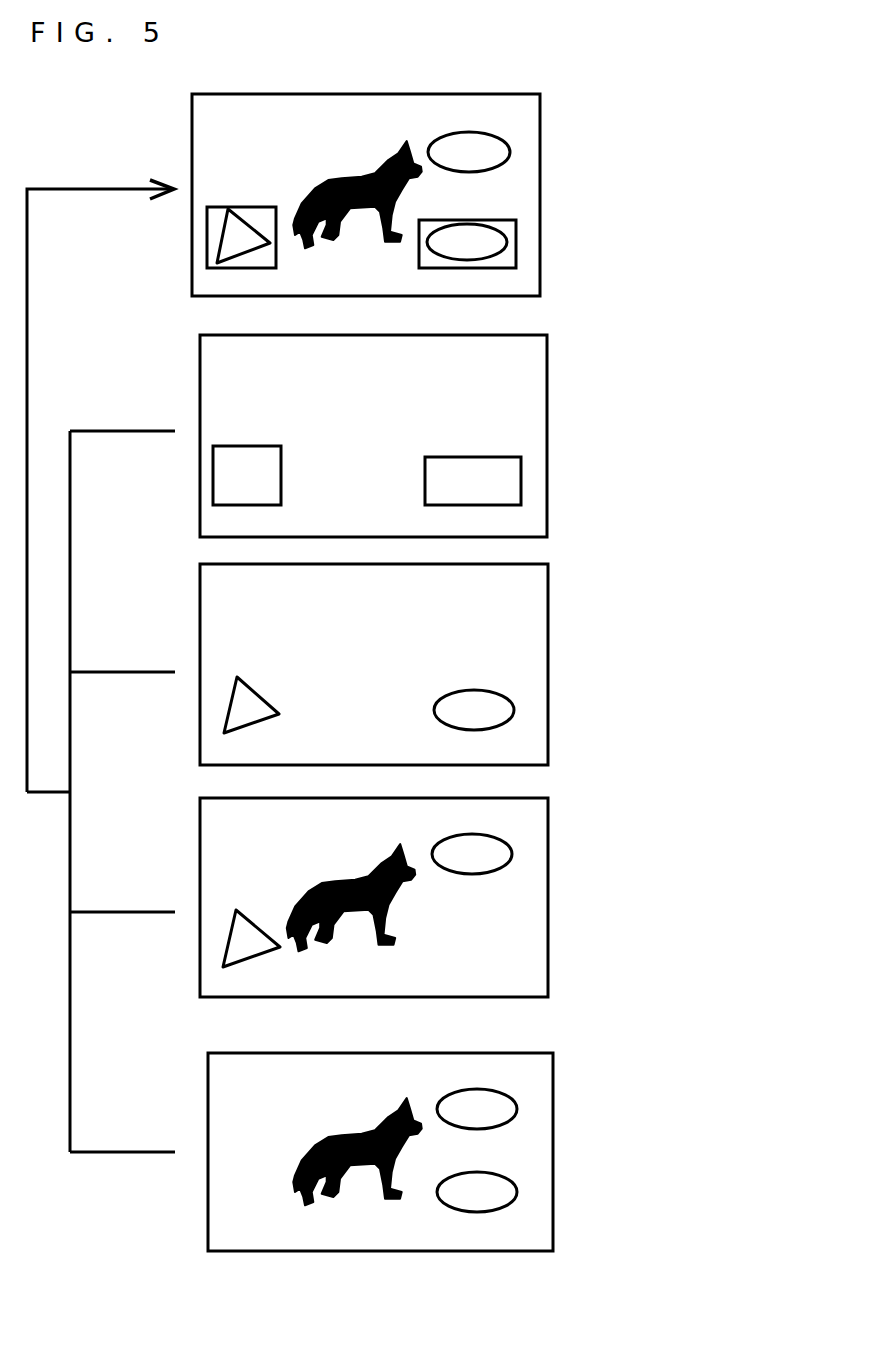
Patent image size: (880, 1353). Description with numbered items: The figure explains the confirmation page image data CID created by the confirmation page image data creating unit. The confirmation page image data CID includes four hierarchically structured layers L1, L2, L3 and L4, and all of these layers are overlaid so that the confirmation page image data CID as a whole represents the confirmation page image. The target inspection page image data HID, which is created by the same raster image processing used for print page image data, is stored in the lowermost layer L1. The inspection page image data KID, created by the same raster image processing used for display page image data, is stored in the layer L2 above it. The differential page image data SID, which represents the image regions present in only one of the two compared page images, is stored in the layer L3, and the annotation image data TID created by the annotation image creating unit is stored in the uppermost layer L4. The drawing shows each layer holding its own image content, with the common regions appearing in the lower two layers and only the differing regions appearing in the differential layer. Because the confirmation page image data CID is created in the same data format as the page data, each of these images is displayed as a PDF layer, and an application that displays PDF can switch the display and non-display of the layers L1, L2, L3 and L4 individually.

The lowermost layer L1 is at (169, 1089).
The layer L2 is at (169, 834).
The layer L3 is at (179, 601).
The layer L4 is at (177, 367).
The confirmation page image data CID is at (540, 208).
The annotation image data TID is at (547, 447).
The differential page image data SID is at (548, 673).
The inspection page image data KID is at (548, 903).
The target inspection page image data HID is at (553, 1165).